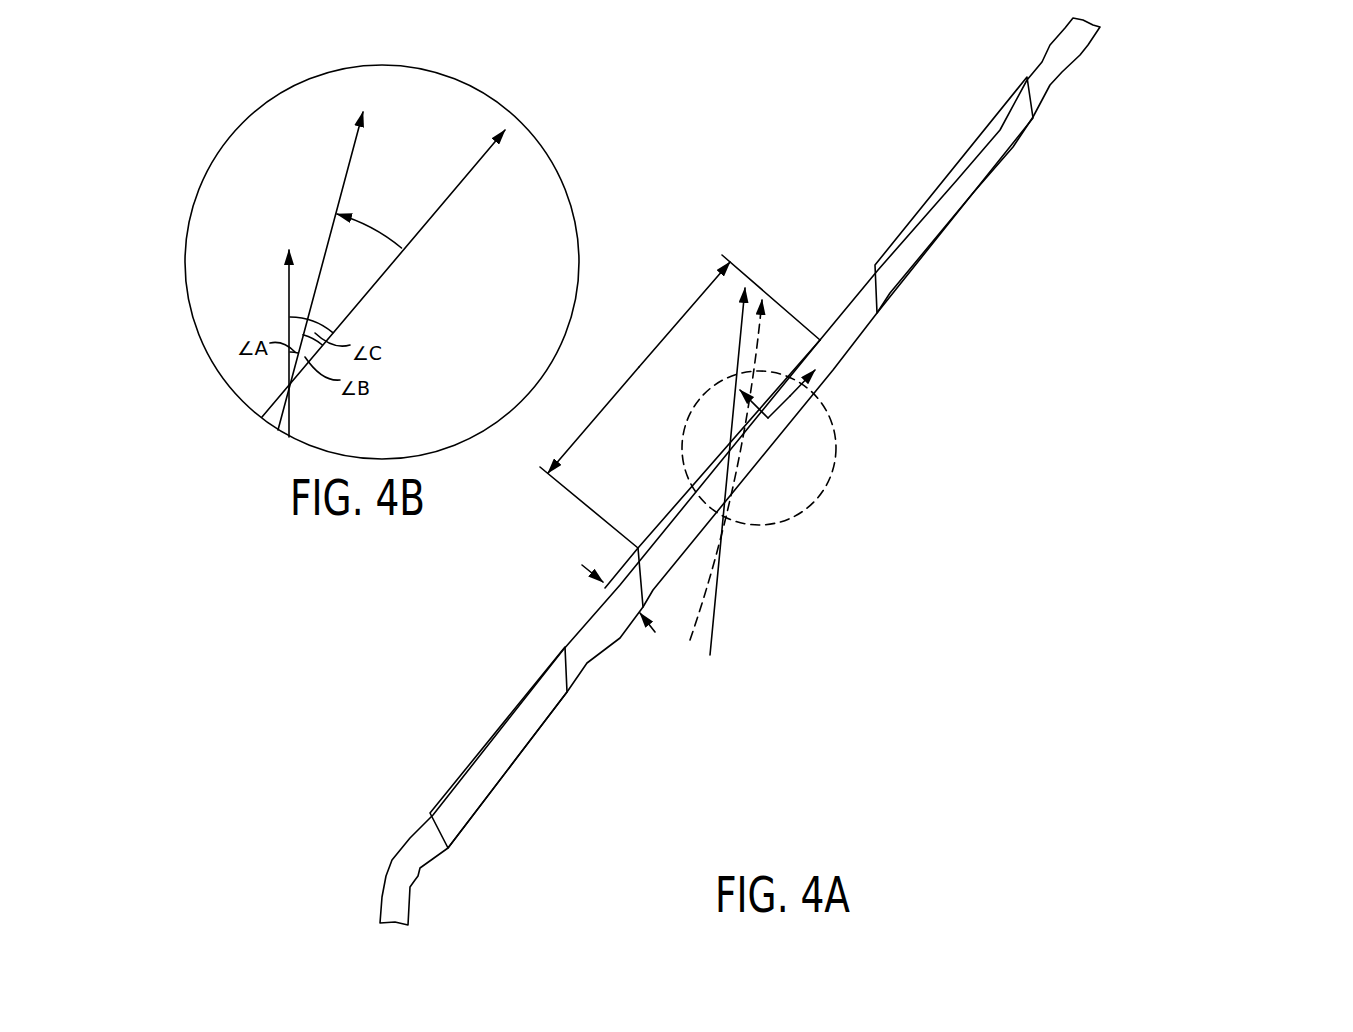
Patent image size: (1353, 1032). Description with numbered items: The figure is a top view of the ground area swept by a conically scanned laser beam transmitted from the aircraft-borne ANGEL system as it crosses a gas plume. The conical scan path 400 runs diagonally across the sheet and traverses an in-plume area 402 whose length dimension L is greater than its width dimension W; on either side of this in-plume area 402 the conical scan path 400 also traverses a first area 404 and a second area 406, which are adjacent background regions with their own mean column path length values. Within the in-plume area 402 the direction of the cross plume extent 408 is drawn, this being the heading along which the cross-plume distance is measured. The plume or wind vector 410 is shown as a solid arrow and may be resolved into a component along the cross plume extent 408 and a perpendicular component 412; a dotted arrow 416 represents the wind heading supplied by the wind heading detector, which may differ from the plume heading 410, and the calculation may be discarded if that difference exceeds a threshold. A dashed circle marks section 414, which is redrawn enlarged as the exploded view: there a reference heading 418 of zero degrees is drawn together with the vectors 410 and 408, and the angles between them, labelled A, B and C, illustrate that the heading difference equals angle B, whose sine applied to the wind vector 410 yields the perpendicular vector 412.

In FIG. 4A, the conical scan path 400 is at (587, 663).
In FIG. 4A, the in-plume area 402 is at (750, 472).
In FIG. 4A, the first area 404 is at (513, 763).
In FIG. 4A, the second area 406 is at (957, 218).
In FIG. 4A, the cross plume extent 408 is at (790, 398).
In FIG. 4B, the cross plume extent 408 is at (437, 210).
In FIG. 4A, the plume or wind vector 410 is at (720, 598).
In FIG. 4B, the plume or wind vector 410 is at (347, 167).
In FIG. 4A, the perpendicular component vector 412 is at (835, 372).
In FIG. 4B, the perpendicular component vector 412 is at (380, 232).
In FIG. 4A, the section 414 is at (795, 518).
In FIG. 4B, the section 414 is at (542, 145).
In FIG. 4A, the wind heading 416 is at (785, 306).
In FIG. 4B, the reference heading 418 is at (288, 290).